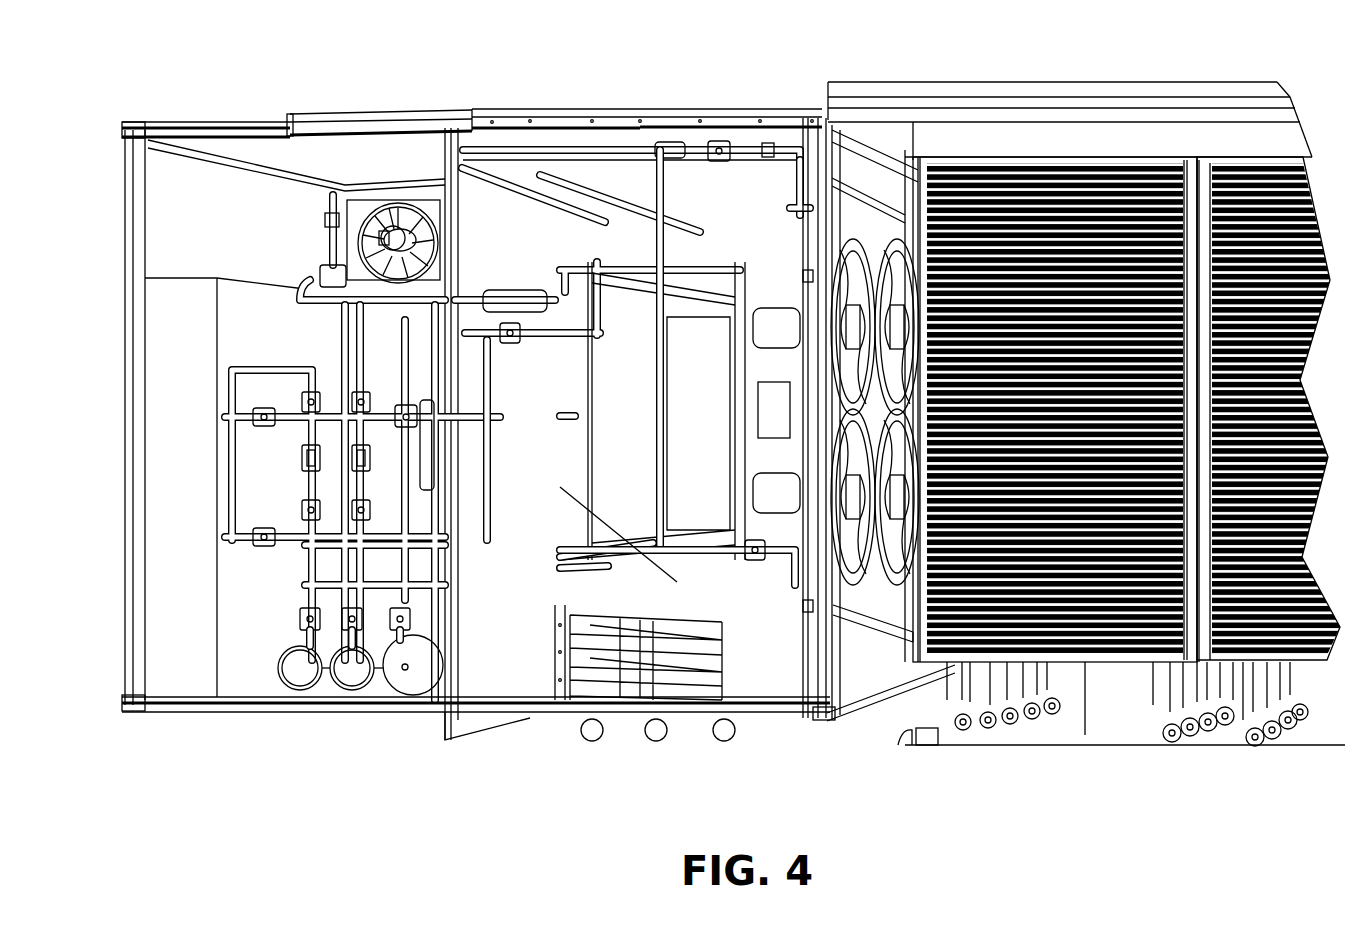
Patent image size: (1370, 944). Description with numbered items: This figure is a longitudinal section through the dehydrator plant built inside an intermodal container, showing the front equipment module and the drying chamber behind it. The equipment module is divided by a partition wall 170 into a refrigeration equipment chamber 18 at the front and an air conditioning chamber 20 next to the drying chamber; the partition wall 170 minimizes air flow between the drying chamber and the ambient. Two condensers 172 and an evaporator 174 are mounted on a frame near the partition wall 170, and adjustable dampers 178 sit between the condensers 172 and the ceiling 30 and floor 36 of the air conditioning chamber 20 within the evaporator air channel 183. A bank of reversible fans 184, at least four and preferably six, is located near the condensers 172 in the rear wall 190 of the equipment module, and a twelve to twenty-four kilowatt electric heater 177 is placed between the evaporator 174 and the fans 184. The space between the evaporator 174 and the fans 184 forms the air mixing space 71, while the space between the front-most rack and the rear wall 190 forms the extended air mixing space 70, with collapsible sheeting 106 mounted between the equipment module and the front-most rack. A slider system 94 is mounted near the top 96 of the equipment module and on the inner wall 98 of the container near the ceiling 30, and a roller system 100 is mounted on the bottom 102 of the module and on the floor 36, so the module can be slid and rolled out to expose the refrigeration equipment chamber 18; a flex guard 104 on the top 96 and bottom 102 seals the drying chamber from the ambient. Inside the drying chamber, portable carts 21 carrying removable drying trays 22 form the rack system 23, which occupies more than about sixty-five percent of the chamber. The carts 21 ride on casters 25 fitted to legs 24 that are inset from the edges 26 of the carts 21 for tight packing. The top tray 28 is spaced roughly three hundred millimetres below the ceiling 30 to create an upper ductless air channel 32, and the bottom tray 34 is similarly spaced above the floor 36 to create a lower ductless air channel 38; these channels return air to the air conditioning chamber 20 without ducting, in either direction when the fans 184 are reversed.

The refrigeration equipment chamber 18 is at (243, 146).
The air conditioning chamber 20 is at (636, 132).
The portable carts 21 is at (1183, 178).
The drying trays 22 is at (1271, 408).
The rack system 23 is at (1298, 40).
The legs 24 is at (1240, 683).
The casters 25 is at (1250, 682).
The edges 26 is at (1190, 688).
The top tray 28 is at (1090, 180).
The ceiling 30 is at (1282, 104).
The upper ductless air channel 32 is at (1272, 138).
The bottom tray 34 is at (1127, 648).
The floor 36 is at (900, 740).
The lower ductless air channel 38 is at (1085, 675).
The extended air mixing space 70 is at (900, 583).
The air mixing space 71 is at (748, 325).
The slider system 94 is at (700, 121).
The top 96 is at (150, 148).
The inner wall 98 is at (857, 165).
The roller system 100 is at (595, 735).
The bottom 102 is at (623, 720).
The flex guard 104 is at (530, 720).
The collapsible sheeting 106 is at (887, 205).
The partition wall 170 is at (465, 178).
The condensers 172 is at (703, 242).
The evaporator 174 is at (540, 521).
The electric heater 177 is at (773, 400).
The adjustable dampers 178 is at (588, 175).
The evaporator air channel 183 is at (755, 165).
The reversible fans 184 is at (780, 500).
The rear wall 190 is at (817, 720).